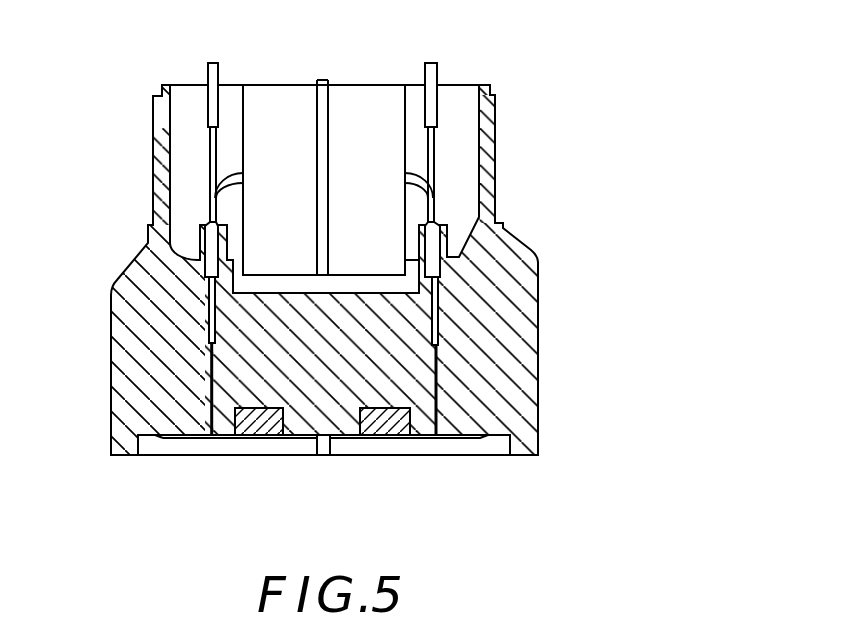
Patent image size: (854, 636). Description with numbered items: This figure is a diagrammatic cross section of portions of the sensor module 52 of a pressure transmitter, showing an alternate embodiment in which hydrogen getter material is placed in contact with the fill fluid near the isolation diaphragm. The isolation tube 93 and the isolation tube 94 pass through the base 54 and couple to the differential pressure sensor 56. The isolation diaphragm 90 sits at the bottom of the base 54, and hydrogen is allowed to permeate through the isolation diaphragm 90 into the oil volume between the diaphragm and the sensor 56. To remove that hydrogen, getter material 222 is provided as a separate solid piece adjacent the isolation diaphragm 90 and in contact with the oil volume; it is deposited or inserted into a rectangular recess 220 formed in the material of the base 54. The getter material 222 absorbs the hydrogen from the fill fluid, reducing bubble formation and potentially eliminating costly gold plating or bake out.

The sensor module 52 is at (427, 318).
The base 54 is at (508, 331).
The differential pressure sensor 56 is at (375, 195).
The isolation diaphragm 90 is at (165, 435).
The isolation tube 93 is at (210, 325).
The isolation tube 94 is at (440, 333).
The recess 220 is at (292, 420).
The getter material 222 is at (260, 420).